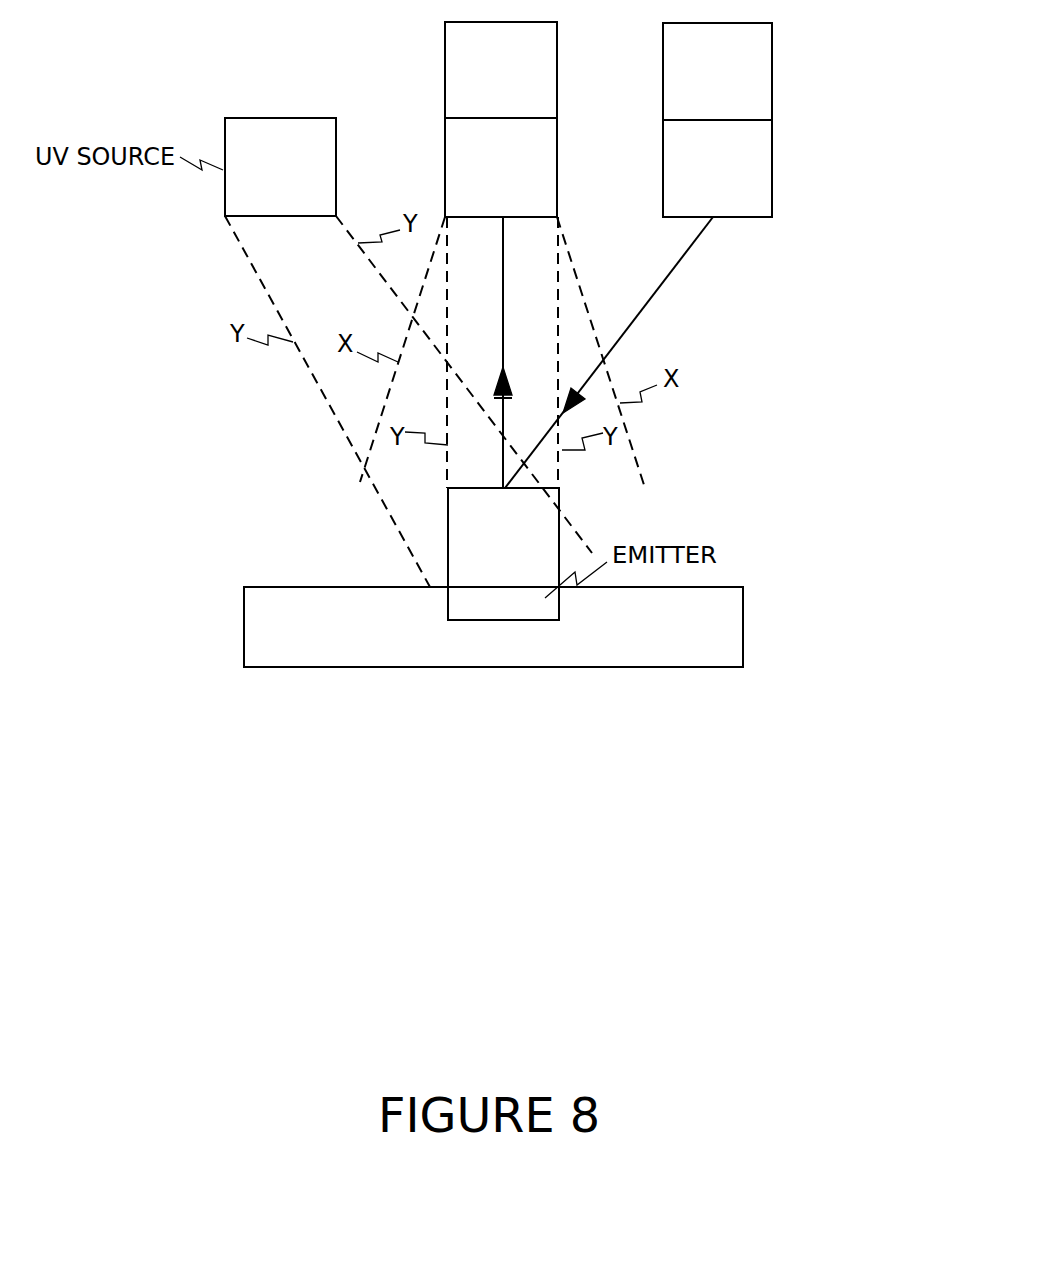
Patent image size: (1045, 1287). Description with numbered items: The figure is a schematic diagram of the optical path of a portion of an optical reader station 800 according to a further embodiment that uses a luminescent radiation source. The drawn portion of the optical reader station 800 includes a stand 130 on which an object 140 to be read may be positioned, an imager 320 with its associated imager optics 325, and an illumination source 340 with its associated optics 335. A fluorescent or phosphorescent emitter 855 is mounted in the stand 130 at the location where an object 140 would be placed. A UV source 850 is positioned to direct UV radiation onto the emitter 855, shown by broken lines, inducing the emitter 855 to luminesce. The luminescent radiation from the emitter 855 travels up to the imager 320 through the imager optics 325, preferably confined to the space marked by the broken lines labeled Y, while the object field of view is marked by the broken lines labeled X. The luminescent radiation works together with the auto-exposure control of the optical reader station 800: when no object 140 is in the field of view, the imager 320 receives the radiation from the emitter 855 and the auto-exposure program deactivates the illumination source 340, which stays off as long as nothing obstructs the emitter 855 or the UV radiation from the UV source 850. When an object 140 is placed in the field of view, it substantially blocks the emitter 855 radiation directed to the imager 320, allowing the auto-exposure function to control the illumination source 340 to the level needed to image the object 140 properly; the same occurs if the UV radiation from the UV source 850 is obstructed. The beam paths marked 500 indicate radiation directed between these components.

The stand 130 is at (493, 627).
The object 140 is at (503, 554).
The emitter 855 is at (503, 603).
The UV source 850 is at (280, 167).
The imager 320 is at (501, 70).
The imager optics 325 is at (501, 167).
The illumination source 340 is at (717, 71).
The illumination source optics 335 is at (717, 168).
The beams 500 is at (505, 334).
The optical reader station 800 is at (811, 109).